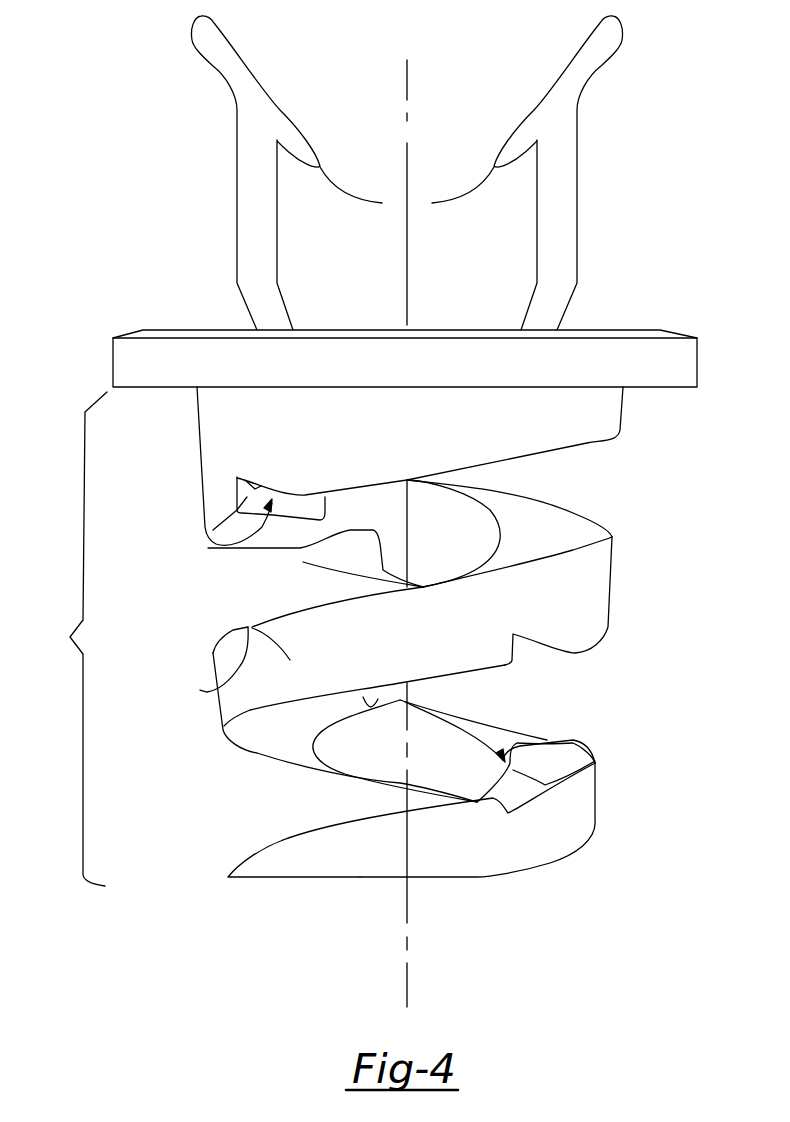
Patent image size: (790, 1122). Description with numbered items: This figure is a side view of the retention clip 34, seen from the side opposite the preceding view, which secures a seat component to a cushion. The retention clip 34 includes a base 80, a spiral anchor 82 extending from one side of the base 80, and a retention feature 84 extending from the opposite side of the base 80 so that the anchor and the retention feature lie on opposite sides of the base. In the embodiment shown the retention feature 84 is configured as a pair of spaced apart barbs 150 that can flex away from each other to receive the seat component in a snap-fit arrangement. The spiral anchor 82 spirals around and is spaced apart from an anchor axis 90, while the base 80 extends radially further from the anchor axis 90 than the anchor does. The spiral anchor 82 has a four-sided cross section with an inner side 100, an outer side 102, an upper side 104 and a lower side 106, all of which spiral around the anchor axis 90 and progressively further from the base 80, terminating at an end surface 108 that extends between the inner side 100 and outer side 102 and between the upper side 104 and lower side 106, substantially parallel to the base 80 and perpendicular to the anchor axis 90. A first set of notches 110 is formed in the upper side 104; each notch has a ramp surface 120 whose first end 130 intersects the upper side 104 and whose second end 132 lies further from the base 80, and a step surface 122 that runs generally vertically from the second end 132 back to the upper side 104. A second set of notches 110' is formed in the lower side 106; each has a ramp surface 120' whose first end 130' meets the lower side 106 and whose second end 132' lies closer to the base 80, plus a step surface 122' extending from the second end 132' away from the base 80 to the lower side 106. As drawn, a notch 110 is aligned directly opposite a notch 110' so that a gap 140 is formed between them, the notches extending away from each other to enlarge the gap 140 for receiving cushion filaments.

The retention clip 34 is at (122, 328).
The base 80 is at (394, 376).
The spiral anchor 82 is at (74, 639).
The retention feature 84 is at (249, 64).
The anchor axis 90 is at (405, 943).
The inner side 100 is at (368, 753).
The outer side 102 is at (597, 793).
The upper side 104 is at (580, 527).
The lower side 106 is at (256, 738).
The end surface 108 is at (353, 878).
The first set of notches 110 is at (412, 749).
The second set of notches 110' is at (413, 531).
The ramp surface 120 is at (296, 617).
The ramp surface 120' is at (240, 479).
The step surface 122 is at (330, 676).
The step surface 122' is at (203, 488).
The first end 130 is at (320, 631).
The first end 130' is at (631, 632).
The second end 132 is at (195, 692).
The second end 132' is at (468, 617).
The gap 140 is at (514, 492).
The barbs 150 is at (407, 191).